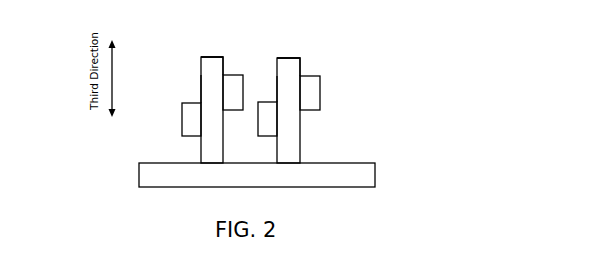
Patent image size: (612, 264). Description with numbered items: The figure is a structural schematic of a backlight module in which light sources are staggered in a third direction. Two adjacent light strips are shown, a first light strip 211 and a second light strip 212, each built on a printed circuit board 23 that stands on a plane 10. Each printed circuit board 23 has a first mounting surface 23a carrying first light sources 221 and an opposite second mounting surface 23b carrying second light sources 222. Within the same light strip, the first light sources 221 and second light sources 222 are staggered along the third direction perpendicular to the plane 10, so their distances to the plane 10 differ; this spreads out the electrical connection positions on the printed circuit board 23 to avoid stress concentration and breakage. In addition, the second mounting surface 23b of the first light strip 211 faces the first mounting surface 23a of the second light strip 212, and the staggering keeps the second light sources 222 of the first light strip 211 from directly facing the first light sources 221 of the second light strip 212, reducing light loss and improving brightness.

The plane 10 is at (348, 162).
The printed circuit board 23 is at (208, 145).
The first mounting surface 23a is at (201, 86).
The second mounting surface 23b is at (215, 67).
The first light strip 211 is at (212, 57).
The second light strip 212 is at (300, 58).
The first light sources 221 is at (195, 115).
The second light sources 222 is at (237, 75).